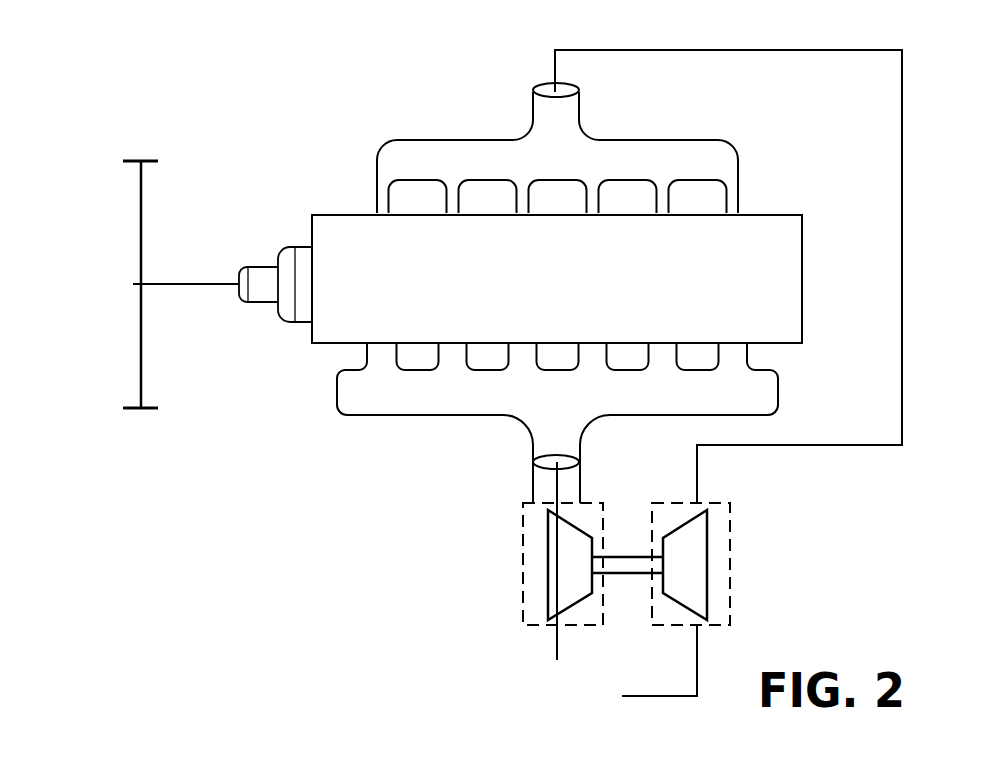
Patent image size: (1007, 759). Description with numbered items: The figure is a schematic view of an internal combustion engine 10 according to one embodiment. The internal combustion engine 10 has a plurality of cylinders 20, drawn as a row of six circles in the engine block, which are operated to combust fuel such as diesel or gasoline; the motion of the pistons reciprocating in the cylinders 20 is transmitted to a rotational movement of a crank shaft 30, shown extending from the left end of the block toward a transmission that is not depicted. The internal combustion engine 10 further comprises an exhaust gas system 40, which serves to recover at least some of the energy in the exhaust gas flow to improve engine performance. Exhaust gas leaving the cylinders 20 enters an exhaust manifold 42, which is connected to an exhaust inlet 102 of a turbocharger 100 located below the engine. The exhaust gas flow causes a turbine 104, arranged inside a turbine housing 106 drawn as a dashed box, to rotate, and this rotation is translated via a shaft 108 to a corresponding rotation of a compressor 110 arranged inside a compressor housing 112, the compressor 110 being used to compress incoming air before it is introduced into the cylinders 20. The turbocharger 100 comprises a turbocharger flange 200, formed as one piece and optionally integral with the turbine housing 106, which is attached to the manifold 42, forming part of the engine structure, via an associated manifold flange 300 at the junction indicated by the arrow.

The internal combustion engine 10 is at (266, 75).
The cylinders 20 is at (398, 296).
The crank shaft 30 is at (138, 247).
The exhaust gas system 40 is at (752, 390).
The exhaust manifold 42 is at (678, 417).
The turbocharger flange 200 is at (518, 462).
The manifold flange 300 is at (476, 490).
The turbocharger 100 is at (631, 579).
The exhaust inlet 102 is at (547, 493).
The turbine 104 is at (565, 592).
The turbine housing 106 is at (523, 565).
The shaft 108 is at (630, 573).
The compressor 110 is at (698, 537).
The compressor housing 112 is at (730, 617).